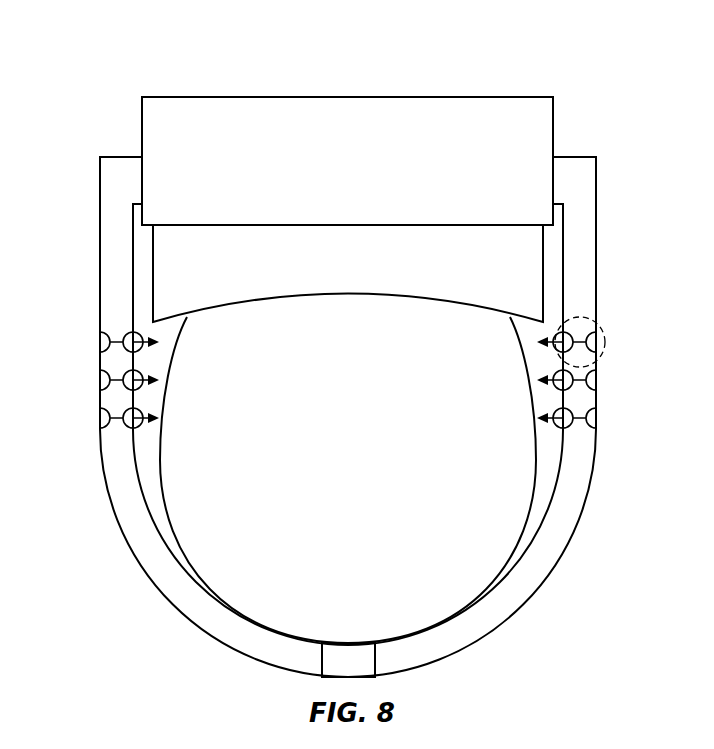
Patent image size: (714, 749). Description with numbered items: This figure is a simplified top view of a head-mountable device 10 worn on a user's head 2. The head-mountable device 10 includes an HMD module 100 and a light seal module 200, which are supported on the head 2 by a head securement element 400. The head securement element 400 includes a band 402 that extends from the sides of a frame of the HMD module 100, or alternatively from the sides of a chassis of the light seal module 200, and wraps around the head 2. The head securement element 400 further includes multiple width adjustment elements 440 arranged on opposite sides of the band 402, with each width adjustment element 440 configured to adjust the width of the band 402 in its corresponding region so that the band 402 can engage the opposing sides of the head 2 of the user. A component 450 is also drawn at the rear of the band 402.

The head-mountable device 10 is at (131, 80).
The head 2 is at (485, 543).
The HMD module 100 is at (142, 97).
The light seal module 200 is at (168, 277).
The head securement element 400 is at (570, 180).
The band 402 is at (598, 232).
The width adjustment elements 440 is at (113, 349).
The tension adjuster 450 is at (347, 657).